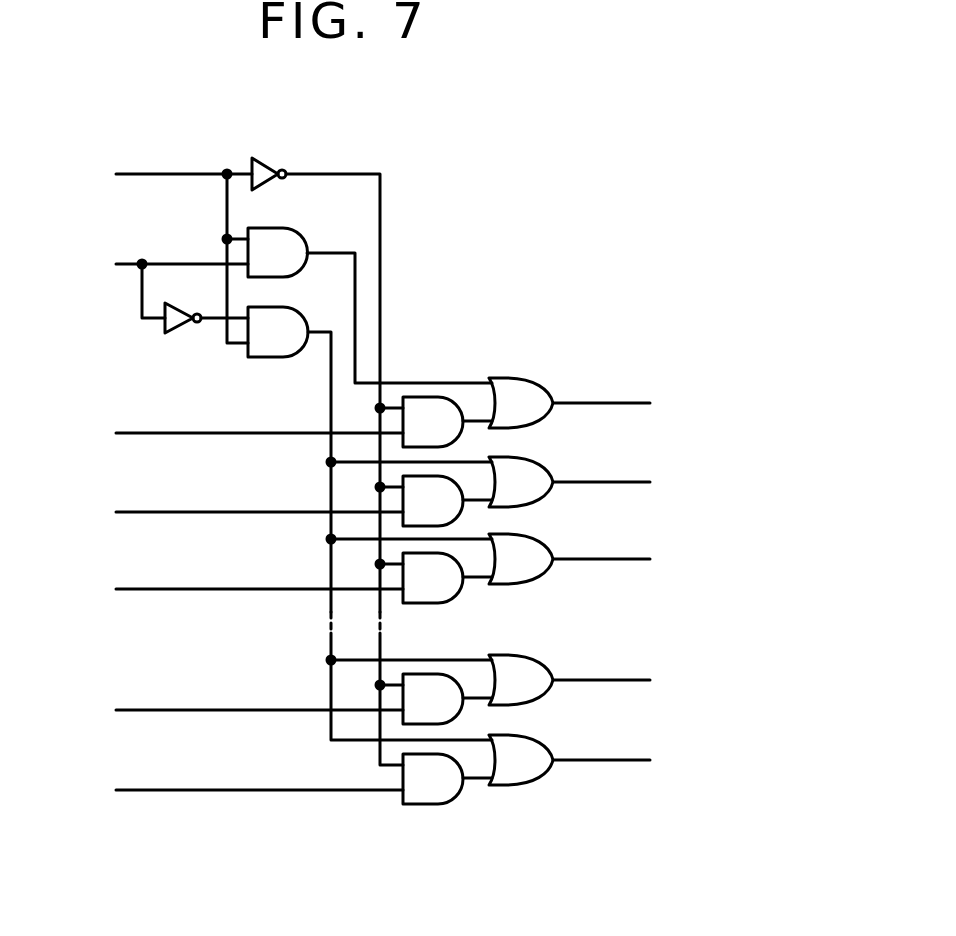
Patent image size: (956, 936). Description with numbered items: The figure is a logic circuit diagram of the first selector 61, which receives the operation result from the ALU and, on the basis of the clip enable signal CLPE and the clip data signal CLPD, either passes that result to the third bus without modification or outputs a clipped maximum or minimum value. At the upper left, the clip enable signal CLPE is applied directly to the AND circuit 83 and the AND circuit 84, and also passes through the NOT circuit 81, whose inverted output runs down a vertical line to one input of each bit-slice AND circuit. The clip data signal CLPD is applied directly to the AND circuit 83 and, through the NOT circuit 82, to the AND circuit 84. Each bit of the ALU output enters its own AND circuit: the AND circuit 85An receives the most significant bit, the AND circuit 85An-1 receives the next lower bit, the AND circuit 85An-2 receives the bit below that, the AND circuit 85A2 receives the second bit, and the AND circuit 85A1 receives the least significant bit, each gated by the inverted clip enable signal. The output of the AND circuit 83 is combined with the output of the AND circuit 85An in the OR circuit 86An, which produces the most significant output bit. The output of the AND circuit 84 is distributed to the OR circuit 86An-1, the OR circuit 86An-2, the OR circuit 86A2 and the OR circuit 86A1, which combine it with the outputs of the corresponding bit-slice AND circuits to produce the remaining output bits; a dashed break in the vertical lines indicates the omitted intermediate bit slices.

The first selector 61 is at (465, 283).
The NOT circuit 81 is at (265, 160).
The NOT circuit 82 is at (178, 330).
The AND circuit 83 is at (304, 232).
The AND circuit 84 is at (306, 316).
The AND circuit 85An is at (432, 396).
The AND circuit 85An-1 is at (401, 503).
The AND circuit 85An-2 is at (401, 580).
The AND circuit 85A2 is at (401, 702).
The AND circuit 85A1 is at (430, 805).
The OR circuit 86An is at (548, 379).
The OR circuit 86An-1 is at (560, 425).
The OR circuit 86An-2 is at (548, 545).
The OR circuit 86A2 is at (548, 668).
The OR circuit 86A1 is at (548, 748).